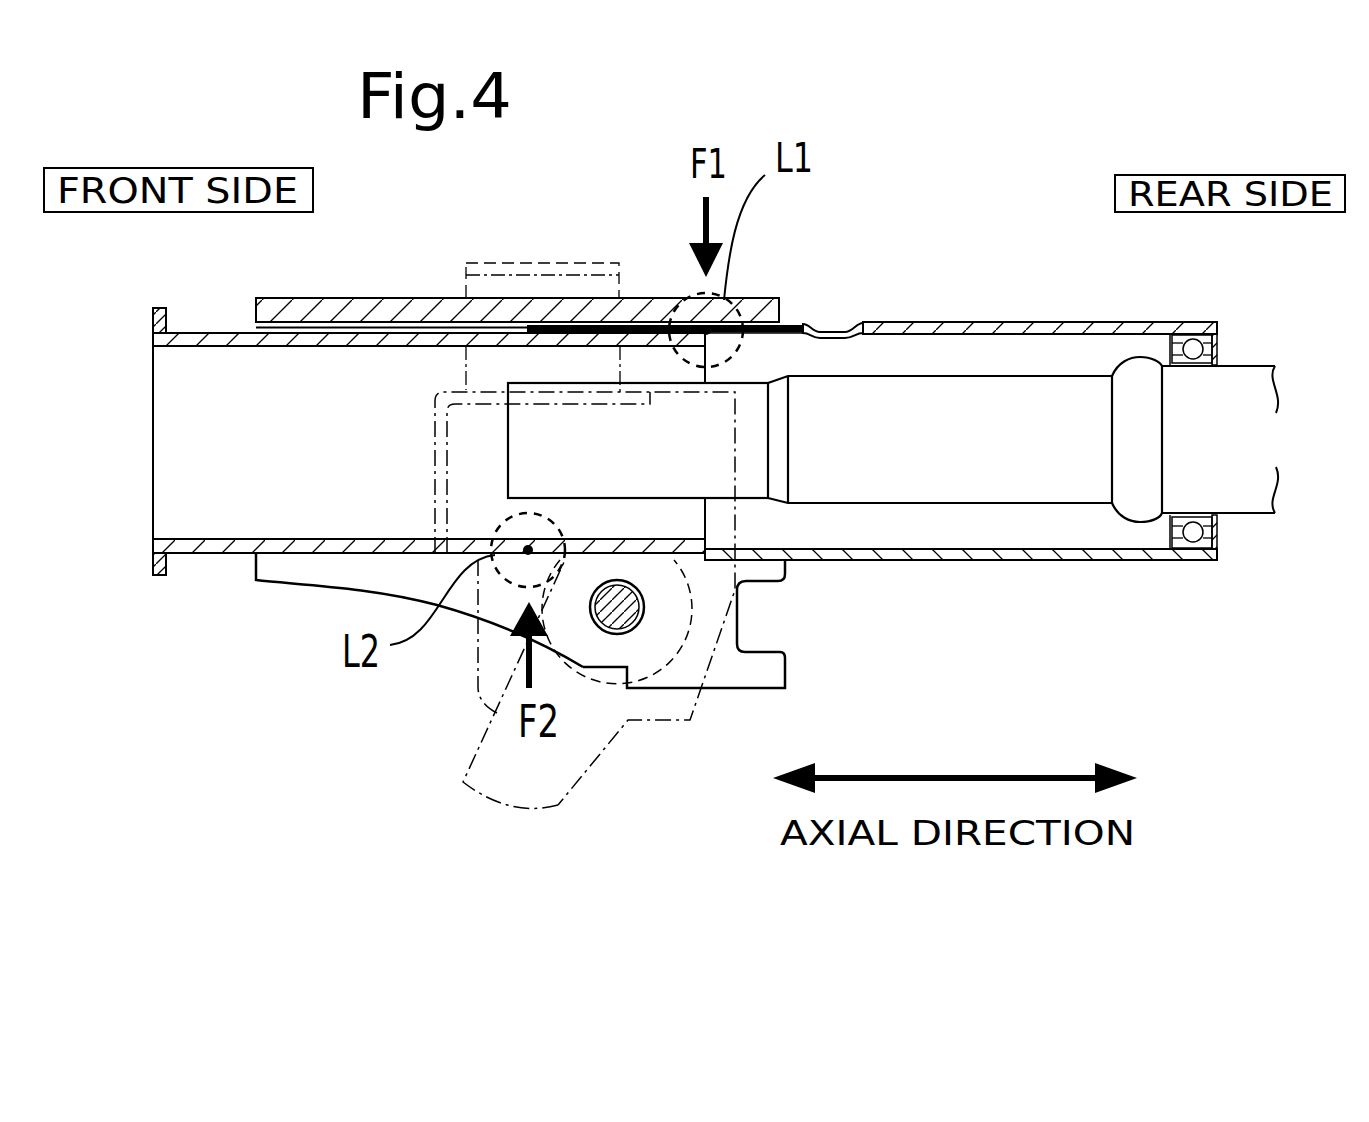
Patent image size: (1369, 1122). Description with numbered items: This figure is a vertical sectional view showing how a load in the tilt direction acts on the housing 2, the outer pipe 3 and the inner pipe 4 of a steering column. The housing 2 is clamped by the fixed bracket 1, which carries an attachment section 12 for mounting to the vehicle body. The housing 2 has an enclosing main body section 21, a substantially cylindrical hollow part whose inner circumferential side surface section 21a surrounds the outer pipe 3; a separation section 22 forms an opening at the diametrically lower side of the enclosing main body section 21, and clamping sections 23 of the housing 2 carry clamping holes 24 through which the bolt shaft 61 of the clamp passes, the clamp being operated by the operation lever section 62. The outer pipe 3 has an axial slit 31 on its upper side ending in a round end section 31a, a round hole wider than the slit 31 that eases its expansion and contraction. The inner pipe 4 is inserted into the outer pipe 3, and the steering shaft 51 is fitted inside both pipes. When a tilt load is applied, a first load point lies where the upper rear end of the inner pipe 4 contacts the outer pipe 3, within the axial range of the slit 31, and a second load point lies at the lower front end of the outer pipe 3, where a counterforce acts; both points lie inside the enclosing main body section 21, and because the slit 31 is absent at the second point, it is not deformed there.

The fixed bracket 1 is at (455, 691).
The housing 2 is at (773, 283).
The outer pipe 3 is at (1037, 312).
The inner pipe 4 is at (229, 333).
The attachment section 12 is at (603, 405).
The enclosing main body section 21 is at (322, 298).
The inner circumferential side surface section 21a is at (767, 336).
The separation section 22 is at (590, 645).
The clamping section 23 is at (770, 668).
The clamping hole 24 is at (627, 630).
The slit 31 is at (648, 298).
The round end section 31a is at (840, 336).
The steering shaft 51 is at (1253, 365).
The bolt shaft 61 is at (614, 608).
The operation lever section 62 is at (487, 728).